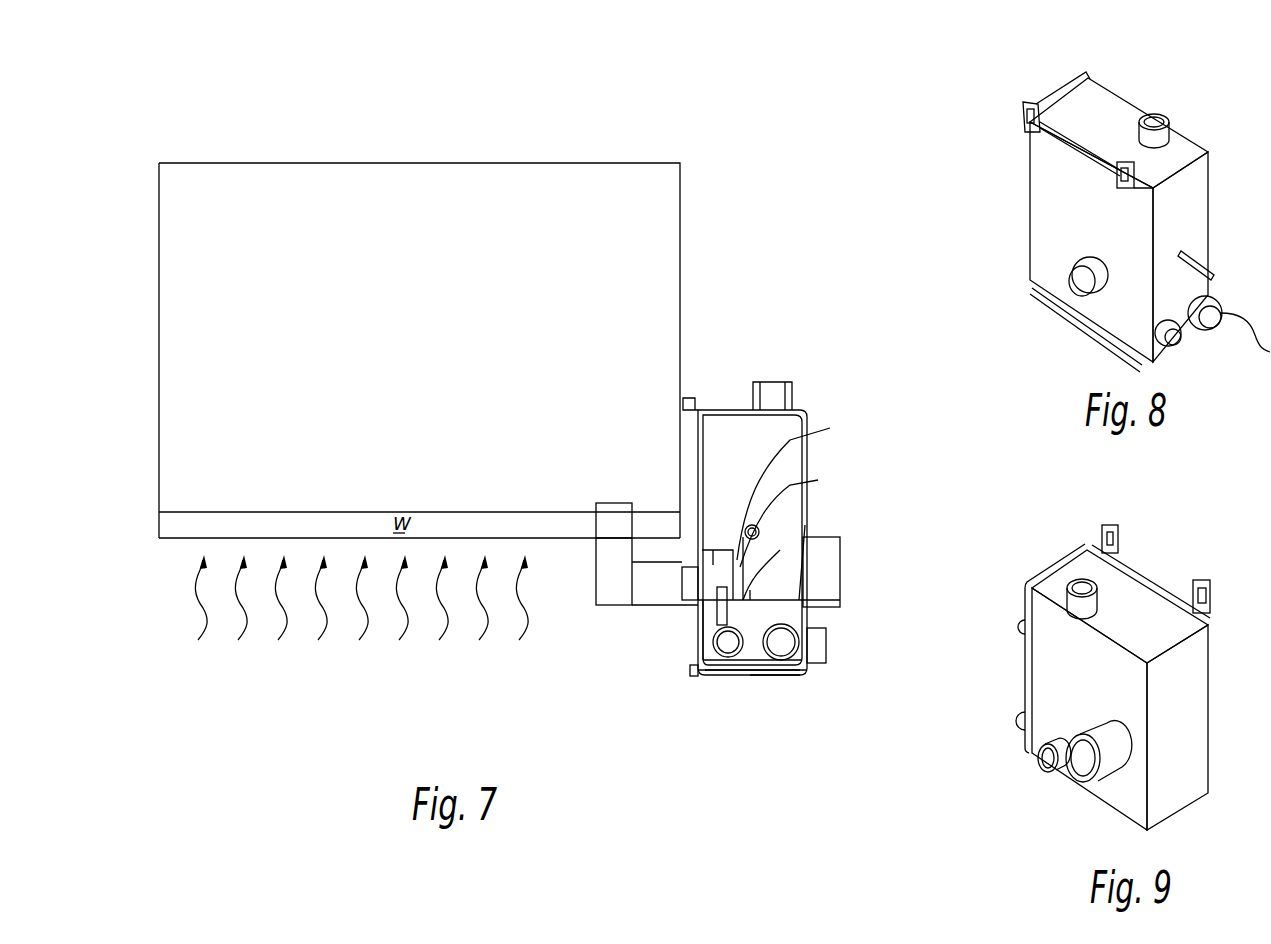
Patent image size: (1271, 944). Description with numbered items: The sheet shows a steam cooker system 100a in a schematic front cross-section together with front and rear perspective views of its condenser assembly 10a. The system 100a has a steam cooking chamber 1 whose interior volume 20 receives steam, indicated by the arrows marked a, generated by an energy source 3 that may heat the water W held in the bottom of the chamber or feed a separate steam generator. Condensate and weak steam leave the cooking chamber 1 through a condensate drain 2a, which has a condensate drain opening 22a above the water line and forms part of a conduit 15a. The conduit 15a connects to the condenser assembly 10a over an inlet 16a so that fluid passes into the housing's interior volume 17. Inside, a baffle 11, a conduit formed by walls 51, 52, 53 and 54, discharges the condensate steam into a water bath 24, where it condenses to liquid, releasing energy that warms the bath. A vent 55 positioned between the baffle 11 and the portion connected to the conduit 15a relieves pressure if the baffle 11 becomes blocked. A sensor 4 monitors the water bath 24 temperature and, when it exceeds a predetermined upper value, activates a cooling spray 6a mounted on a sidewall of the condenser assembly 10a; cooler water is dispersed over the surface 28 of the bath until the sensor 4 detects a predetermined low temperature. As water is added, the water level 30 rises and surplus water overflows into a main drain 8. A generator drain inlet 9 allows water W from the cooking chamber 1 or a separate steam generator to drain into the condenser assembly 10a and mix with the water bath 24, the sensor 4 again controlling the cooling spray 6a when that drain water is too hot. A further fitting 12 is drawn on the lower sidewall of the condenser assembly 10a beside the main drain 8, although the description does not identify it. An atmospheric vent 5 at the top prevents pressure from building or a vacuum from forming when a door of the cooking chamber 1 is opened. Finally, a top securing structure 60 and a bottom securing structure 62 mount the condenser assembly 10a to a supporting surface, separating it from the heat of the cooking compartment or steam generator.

In FIG. 7, the system 100a is at (536, 140).
In FIG. 7, the steam cooking chamber 1 is at (598, 232).
In FIG. 7, the interior volume 20 is at (412, 353).
In FIG. 7, the energy source 3 is at (360, 642).
In FIG. 7, the condensate drain 2a is at (598, 503).
In FIG. 7, the condensate drain opening 22a is at (628, 503).
In FIG. 7, the conduit 15a is at (623, 583).
In FIG. 7, the inlet 16a is at (688, 585).
In FIG. 8, the inlet 16a is at (1078, 272).
In FIG. 7, the interior volume 17 is at (741, 487).
In FIG. 8, the interior volume 17 is at (1119, 220).
In FIG. 9, the interior volume 17 is at (1120, 690).
In FIG. 7, the top securing structure 60 is at (690, 398).
In FIG. 8, the top securing structure 60 is at (1028, 102).
In FIG. 9, the top securing structure 60 is at (1105, 525).
In FIG. 7, the atmospheric vent 5 is at (760, 382).
In FIG. 8, the atmospheric vent 5 is at (1158, 114).
In FIG. 7, the baffle wall 52 is at (797, 488).
In FIG. 7, the cooling spray 6a is at (791, 518).
In FIG. 8, the cooling spray 6a is at (1212, 265).
In FIG. 7, the baffle 11 is at (780, 550).
In FIG. 7, the water level 30 is at (805, 535).
In FIG. 7, the baffle wall 51 is at (706, 550).
In FIG. 7, the baffle wall 53 is at (760, 531).
In FIG. 7, the surface 28 is at (750, 590).
In FIG. 7, the main drain 8 is at (843, 572).
In FIG. 9, the main drain 8 is at (1088, 760).
In FIG. 7, the water bath 24 is at (766, 626).
In FIG. 7, the vent 55 is at (715, 612).
In FIG. 7, the baffle wall 54 is at (705, 632).
In FIG. 7, the bottom securing structure 62 is at (692, 676).
In FIG. 8, the bottom securing structure 62 is at (1105, 333).
In FIG. 7, the generator drain inlet 9 is at (755, 675).
In FIG. 7, the sensor 4 is at (806, 676).
In FIG. 8, the sensor 4 is at (1183, 333).
In FIG. 7, the condenser assembly 10a is at (786, 694).
In FIG. 7, the fitting 12 is at (828, 650).
In FIG. 9, the fitting 12 is at (1043, 758).